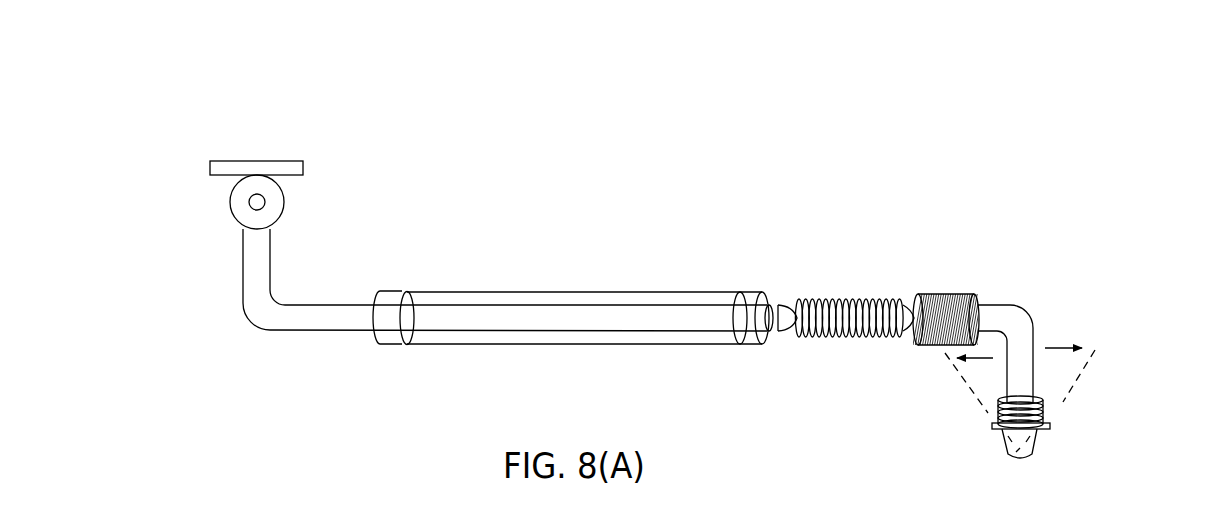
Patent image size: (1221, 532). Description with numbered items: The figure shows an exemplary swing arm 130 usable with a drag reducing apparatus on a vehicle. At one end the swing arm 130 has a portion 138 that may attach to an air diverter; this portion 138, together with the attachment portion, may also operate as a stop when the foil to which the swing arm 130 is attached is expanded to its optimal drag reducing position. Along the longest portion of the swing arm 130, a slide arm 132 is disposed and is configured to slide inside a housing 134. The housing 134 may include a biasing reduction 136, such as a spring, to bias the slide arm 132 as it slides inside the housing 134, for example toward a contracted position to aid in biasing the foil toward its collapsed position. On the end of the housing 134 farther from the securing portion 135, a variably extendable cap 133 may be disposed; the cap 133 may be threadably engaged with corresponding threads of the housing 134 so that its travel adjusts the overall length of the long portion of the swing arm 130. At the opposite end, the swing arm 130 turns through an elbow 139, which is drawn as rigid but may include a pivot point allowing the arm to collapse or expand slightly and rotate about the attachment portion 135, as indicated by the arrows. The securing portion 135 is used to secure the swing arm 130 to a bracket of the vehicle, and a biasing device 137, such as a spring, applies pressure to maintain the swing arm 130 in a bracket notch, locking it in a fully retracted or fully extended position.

The swing arm 130 is at (498, 137).
The slide arm 132 is at (343, 320).
The variably extendable cap 133 is at (977, 293).
The housing 134 is at (575, 290).
The securing portion 135 is at (1037, 438).
The biasing reduction 136 is at (823, 332).
The biasing device 137 is at (1040, 412).
The attachment portion 138 is at (232, 163).
The elbow 139 is at (1013, 328).